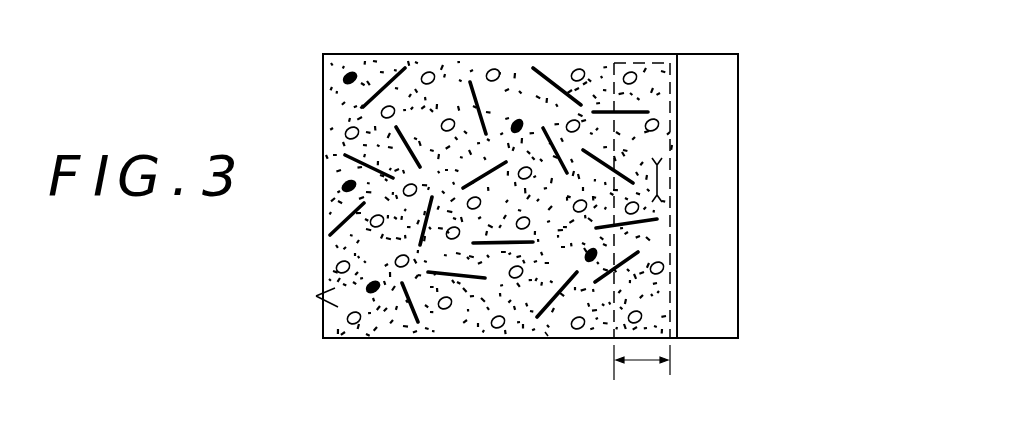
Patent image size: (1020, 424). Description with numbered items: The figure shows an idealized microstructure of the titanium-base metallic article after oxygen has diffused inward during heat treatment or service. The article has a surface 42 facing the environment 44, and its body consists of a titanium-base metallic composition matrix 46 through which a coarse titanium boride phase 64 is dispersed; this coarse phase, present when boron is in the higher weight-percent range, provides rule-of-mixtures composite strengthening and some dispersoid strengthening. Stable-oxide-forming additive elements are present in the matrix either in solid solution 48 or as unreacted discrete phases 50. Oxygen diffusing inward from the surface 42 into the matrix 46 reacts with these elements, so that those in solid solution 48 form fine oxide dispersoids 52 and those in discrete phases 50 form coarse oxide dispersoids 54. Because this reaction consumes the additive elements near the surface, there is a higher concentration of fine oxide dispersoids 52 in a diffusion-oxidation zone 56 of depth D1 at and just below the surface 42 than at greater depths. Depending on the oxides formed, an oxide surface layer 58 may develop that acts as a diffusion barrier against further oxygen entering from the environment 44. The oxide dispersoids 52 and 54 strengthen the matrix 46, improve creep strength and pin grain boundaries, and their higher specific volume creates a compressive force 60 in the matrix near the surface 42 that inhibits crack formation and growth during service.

The surface 42 is at (678, 108).
The environment 44 is at (734, 199).
The titanium-base metallic composition matrix 46 is at (443, 96).
The stable-oxide-forming additive element in solid solution 48 is at (543, 332).
The unreacted discrete phase 50 is at (343, 185).
The fine oxide dispersoids 52 is at (316, 296).
The coarse oxide dispersoids 54 is at (492, 322).
The diffusion-oxidation zone 56 is at (668, 50).
The oxide surface layer 58 is at (669, 97).
The compressive force 60 is at (657, 172).
The coarse titanium boride phase 64 is at (337, 104).
The depth of diffusion-oxidation zone D1 is at (642, 375).